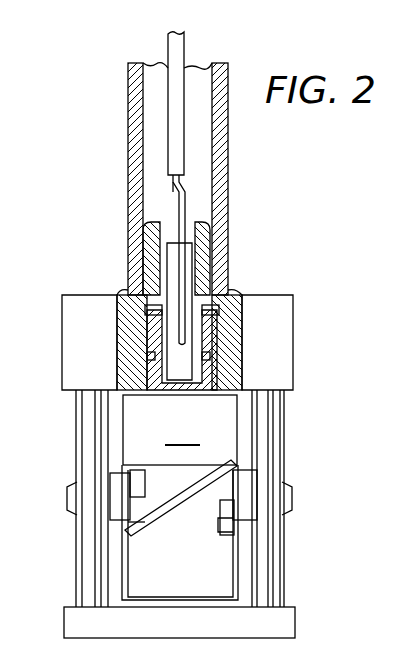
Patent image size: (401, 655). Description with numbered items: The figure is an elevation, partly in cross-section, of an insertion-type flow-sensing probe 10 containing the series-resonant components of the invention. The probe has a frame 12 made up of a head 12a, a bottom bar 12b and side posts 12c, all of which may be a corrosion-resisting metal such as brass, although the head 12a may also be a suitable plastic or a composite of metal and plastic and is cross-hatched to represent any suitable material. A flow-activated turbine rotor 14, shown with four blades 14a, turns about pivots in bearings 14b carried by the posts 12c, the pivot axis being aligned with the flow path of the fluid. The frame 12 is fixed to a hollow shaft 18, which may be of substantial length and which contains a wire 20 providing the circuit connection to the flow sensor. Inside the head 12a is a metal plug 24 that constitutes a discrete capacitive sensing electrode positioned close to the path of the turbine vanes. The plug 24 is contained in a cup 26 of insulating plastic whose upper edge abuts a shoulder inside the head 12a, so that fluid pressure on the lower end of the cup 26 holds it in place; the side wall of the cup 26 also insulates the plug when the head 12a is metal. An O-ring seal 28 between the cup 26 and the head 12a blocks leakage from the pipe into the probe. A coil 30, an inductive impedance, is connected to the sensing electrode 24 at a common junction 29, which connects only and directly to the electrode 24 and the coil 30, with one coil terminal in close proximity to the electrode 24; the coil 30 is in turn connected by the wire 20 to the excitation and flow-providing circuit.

The flow-sensing probe 10 is at (112, 176).
The frame 12 is at (295, 416).
The head 12a is at (285, 321).
The bottom bar 12b is at (292, 618).
The side posts 12c is at (276, 456).
The turbine rotor 14 is at (213, 565).
The blades 14a is at (180, 430).
The bearings 14b is at (70, 506).
The hollow shaft 18 is at (228, 177).
The wire 20 is at (185, 56).
The metal plug 24 is at (158, 341).
The cup 26 is at (150, 371).
The O-ring seal 28 is at (210, 358).
The common junction 29 is at (177, 306).
The coil 30 is at (186, 262).